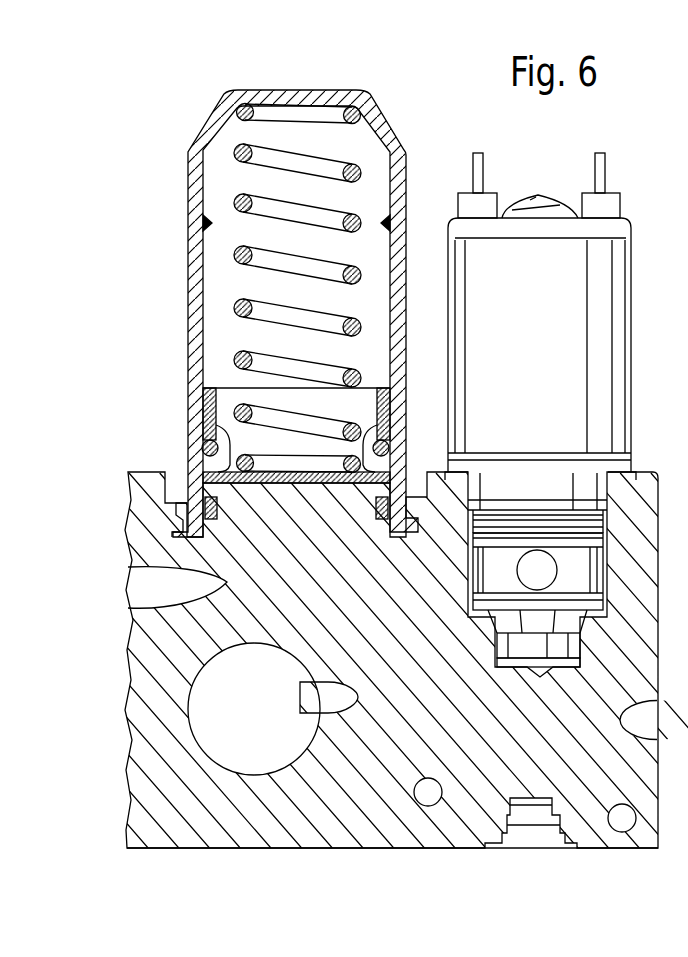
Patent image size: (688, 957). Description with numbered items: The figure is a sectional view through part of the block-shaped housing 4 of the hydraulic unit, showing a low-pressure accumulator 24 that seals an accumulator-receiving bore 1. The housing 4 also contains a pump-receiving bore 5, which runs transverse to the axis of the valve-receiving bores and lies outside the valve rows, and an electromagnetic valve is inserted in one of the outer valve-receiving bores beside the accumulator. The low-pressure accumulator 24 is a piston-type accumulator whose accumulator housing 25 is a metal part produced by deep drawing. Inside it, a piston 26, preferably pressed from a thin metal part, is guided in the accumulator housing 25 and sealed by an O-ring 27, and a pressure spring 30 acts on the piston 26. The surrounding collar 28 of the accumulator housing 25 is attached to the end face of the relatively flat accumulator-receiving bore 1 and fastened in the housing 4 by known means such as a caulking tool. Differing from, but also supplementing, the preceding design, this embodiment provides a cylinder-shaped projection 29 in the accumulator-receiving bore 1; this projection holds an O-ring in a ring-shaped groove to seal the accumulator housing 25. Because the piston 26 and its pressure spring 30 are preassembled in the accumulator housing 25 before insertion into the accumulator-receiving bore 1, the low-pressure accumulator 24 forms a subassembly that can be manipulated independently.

The accumulator-receiving bore 1 is at (177, 470).
The housing 4 is at (368, 866).
The pump-receiving bore 5 is at (207, 703).
The low-pressure accumulator 24 is at (289, 287).
The accumulator housing 25 is at (397, 127).
The piston 26 is at (207, 413).
The O-ring 27 is at (403, 437).
The collar 28 is at (165, 530).
The cylinder-shaped projection 29 is at (317, 503).
The pressure spring 30 is at (277, 147).